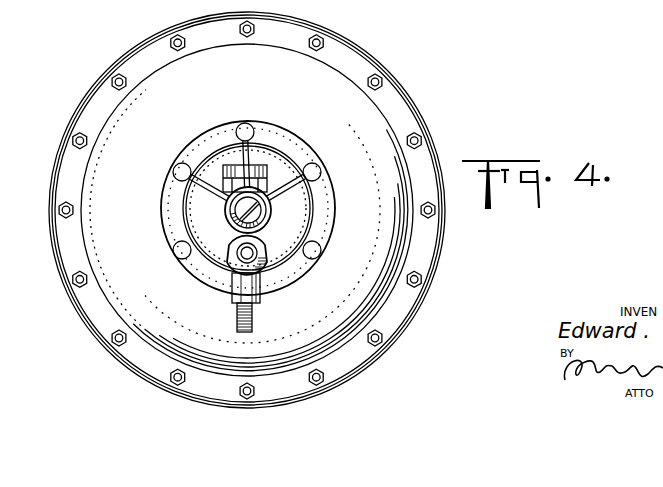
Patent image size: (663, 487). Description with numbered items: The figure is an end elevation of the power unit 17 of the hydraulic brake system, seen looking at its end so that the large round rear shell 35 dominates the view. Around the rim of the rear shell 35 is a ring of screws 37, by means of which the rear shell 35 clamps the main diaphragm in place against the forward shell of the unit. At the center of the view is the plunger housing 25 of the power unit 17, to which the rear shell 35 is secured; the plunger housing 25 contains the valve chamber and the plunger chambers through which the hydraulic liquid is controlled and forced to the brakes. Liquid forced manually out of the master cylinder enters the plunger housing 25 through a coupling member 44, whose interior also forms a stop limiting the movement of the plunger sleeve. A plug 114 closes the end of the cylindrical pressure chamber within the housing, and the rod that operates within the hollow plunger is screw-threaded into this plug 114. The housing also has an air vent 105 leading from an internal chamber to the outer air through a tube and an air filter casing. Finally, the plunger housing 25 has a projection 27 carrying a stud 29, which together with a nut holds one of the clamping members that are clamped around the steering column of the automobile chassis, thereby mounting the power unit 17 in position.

The power unit 17 is at (143, 30).
The screws 37 is at (184, 42).
The rear shell 35 is at (388, 243).
The air vent 105 is at (245, 172).
The plug 114 is at (235, 210).
The plunger housing 25 is at (270, 214).
The coupling member 44 is at (262, 259).
The projection 27 is at (234, 292).
The stud 29 is at (237, 324).